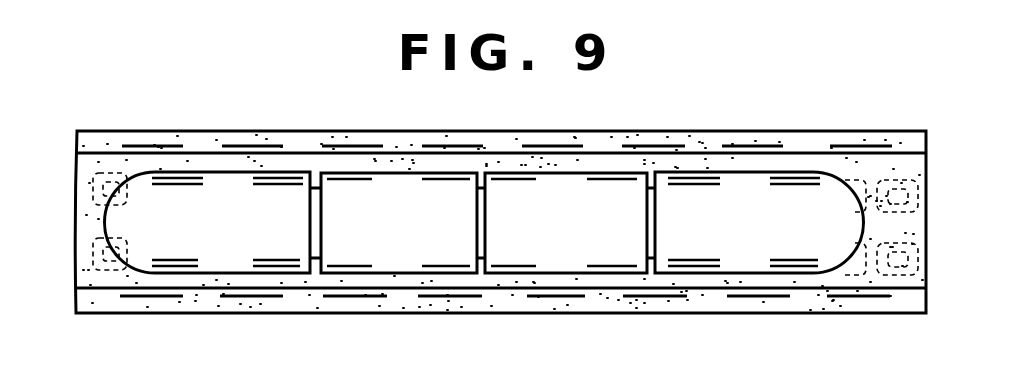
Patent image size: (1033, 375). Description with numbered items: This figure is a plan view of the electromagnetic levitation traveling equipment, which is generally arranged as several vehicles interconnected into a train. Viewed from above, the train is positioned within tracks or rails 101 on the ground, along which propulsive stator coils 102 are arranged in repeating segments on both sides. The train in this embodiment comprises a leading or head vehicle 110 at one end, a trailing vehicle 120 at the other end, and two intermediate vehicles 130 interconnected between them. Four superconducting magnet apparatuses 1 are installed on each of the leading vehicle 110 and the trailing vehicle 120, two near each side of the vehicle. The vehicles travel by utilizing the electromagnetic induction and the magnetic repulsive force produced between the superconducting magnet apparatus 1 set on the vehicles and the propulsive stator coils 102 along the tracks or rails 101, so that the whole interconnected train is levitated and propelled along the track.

The tracks or rails 101 is at (98, 308).
The propulsive stator coils 102 is at (648, 297).
The superconducting magnet apparatus 1 is at (800, 268).
The leading vehicle 110 is at (198, 234).
The trailing vehicle 120 is at (724, 234).
The intermediate vehicles 130 is at (588, 234).